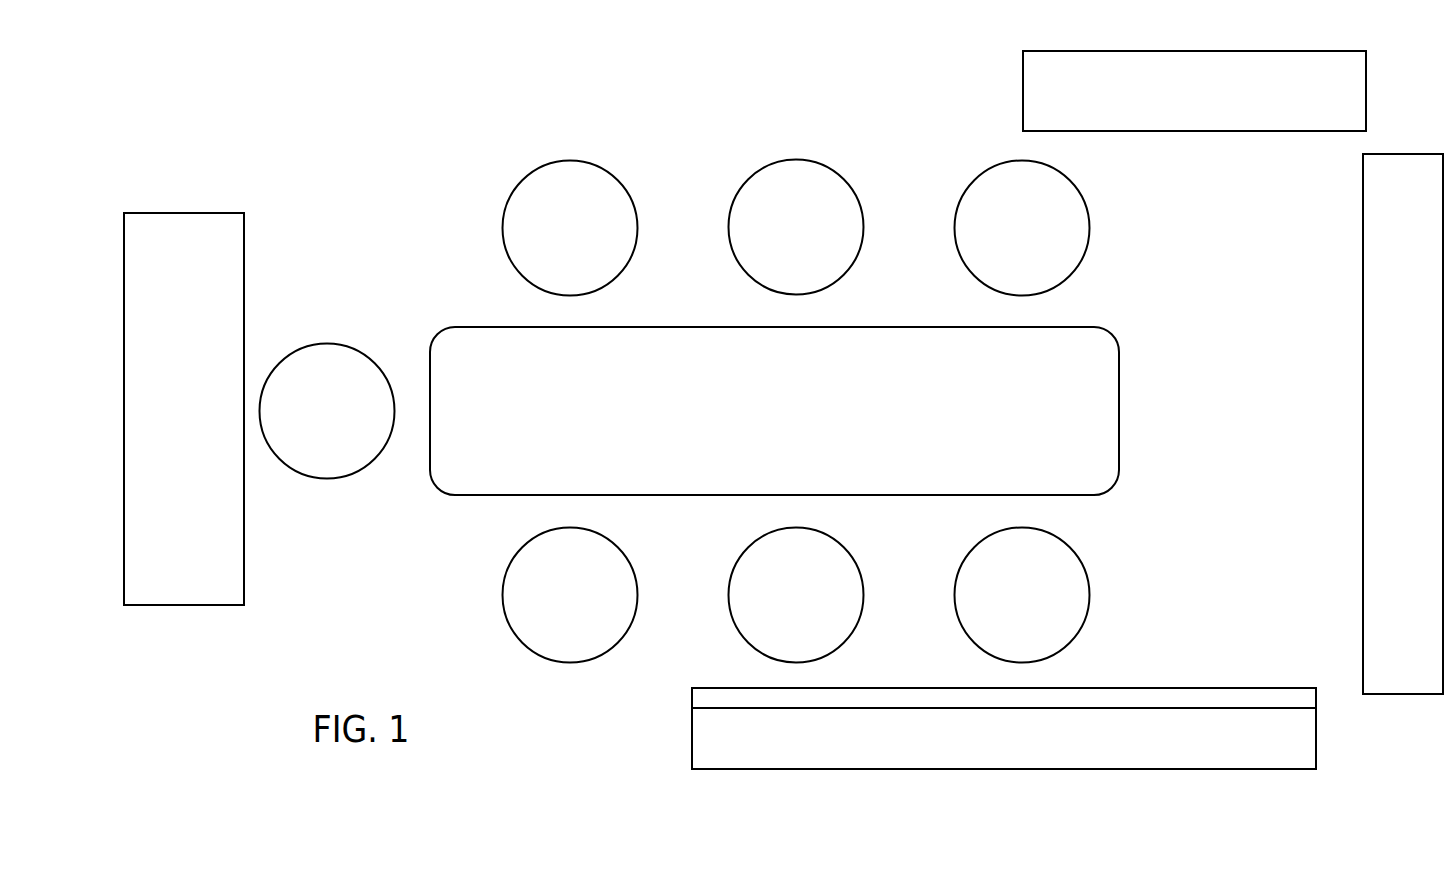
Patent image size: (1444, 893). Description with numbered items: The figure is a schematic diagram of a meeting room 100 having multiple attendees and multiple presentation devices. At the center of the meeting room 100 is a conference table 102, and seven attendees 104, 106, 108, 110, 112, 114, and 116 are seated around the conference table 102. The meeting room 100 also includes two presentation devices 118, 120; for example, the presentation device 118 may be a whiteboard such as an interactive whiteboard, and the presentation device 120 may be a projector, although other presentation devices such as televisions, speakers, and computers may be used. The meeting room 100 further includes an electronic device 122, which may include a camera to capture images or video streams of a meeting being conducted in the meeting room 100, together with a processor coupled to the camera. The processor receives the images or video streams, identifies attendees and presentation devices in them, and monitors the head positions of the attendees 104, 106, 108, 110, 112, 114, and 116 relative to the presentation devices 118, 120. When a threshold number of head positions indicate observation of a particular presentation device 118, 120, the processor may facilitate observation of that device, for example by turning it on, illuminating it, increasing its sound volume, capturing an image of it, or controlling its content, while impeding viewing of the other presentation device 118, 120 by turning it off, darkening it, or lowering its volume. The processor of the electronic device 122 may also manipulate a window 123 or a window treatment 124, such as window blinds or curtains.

The meeting room 100 is at (425, 157).
The conference table 102 is at (757, 420).
The attendee 104 is at (291, 431).
The attendee 106 is at (535, 248).
The attendee 108 is at (766, 248).
The attendee 110 is at (983, 248).
The attendee 112 is at (535, 616).
The attendee 114 is at (763, 616).
The attendee 116 is at (989, 616).
The presentation device 118 is at (1160, 111).
The presentation device 120 is at (1370, 417).
The electronic device 122 is at (144, 431).
The window 123 is at (692, 718).
The window treatment 124 is at (692, 690).